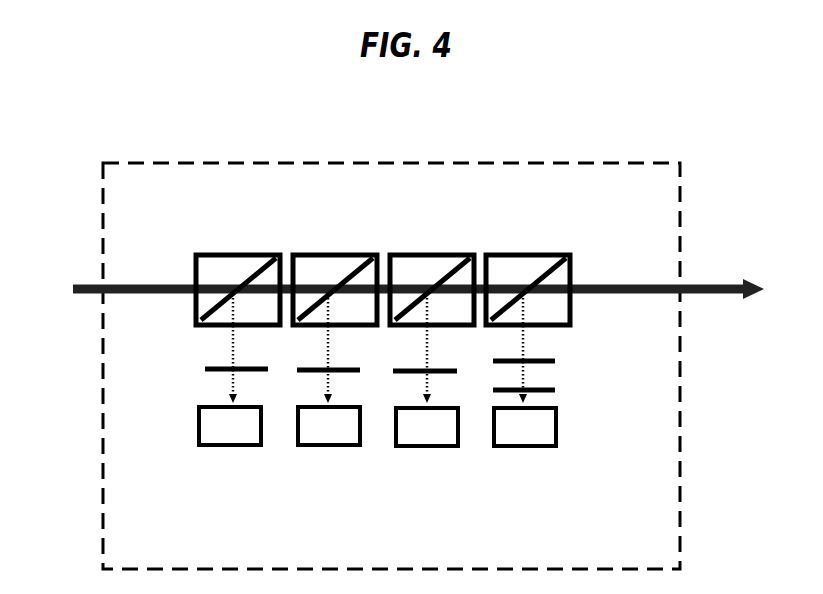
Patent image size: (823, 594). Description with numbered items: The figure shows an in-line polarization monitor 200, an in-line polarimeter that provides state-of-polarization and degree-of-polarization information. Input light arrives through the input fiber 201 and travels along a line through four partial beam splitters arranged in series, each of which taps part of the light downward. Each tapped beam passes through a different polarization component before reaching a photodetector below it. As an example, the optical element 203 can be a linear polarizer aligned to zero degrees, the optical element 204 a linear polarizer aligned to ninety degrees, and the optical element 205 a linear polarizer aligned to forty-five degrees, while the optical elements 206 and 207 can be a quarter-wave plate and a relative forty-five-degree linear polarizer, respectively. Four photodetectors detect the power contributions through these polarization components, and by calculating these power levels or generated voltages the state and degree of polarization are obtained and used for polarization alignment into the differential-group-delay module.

The monitor 200 is at (367, 178).
The input fiber 201 is at (93, 283).
The optical element 203 is at (202, 369).
The optical element 204 is at (348, 378).
The optical element 205 is at (452, 372).
The optical element 206 is at (555, 360).
The optical element 207 is at (557, 390).